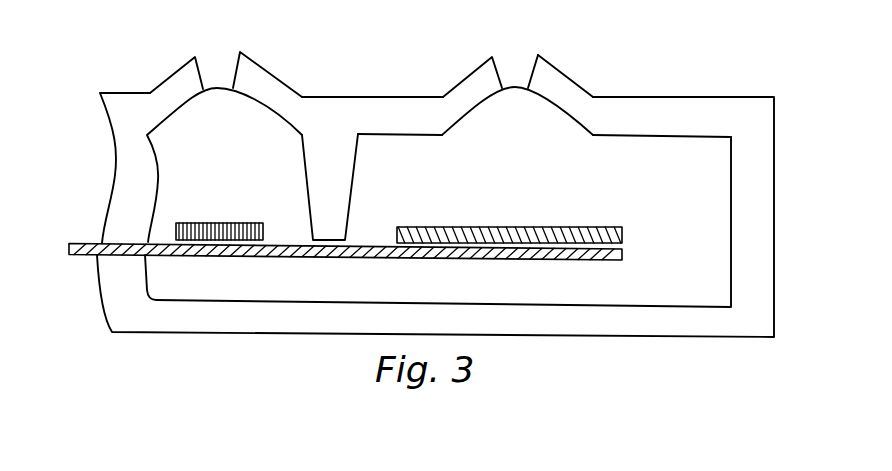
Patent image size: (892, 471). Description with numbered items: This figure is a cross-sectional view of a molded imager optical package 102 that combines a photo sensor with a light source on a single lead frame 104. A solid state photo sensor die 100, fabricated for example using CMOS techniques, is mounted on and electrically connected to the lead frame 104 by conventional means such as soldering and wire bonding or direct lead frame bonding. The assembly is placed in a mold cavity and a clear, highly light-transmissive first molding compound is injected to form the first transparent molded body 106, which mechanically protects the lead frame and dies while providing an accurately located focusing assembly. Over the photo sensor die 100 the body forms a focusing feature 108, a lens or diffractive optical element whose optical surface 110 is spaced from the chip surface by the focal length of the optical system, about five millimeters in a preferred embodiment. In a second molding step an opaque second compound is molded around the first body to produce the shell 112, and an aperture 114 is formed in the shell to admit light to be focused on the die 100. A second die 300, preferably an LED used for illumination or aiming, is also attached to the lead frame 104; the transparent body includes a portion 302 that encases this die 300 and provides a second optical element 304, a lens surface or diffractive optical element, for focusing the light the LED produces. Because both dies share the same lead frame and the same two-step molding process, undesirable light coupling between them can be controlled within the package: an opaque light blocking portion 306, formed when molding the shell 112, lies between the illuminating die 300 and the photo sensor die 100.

The photo sensor die 100 is at (622, 237).
The package 102 is at (673, 98).
The lead frame 104 is at (372, 245).
The first transparent molded body 106 is at (530, 186).
The focusing feature 108 is at (530, 131).
The optical surface 110 is at (512, 88).
The shell 112 is at (665, 127).
The aperture 114 is at (531, 70).
The second die 300 is at (245, 222).
The portion encasing the second die 302 is at (235, 151).
The second optical element 304 is at (217, 87).
The opaque light blocking portion 306 is at (327, 183).